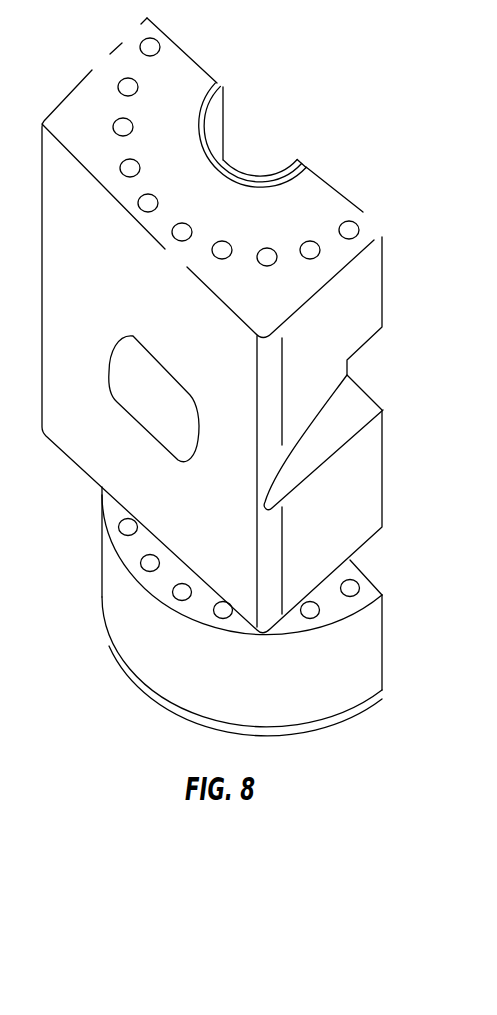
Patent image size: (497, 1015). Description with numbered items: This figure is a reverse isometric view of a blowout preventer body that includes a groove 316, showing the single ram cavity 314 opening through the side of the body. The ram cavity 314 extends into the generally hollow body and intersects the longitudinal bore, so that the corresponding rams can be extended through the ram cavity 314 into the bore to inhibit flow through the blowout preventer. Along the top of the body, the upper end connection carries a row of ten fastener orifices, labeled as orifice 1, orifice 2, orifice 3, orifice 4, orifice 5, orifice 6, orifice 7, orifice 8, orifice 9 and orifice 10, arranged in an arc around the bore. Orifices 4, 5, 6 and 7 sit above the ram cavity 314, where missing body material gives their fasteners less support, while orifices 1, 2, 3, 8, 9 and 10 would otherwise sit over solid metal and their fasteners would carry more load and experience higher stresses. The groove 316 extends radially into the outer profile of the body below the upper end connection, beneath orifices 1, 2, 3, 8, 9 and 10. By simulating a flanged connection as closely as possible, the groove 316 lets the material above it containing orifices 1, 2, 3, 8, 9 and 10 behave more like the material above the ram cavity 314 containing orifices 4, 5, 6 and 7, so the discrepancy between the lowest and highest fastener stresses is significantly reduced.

The orifice 1 is at (143, 33).
The orifice 2 is at (117, 77).
The orifice 3 is at (110, 124).
The orifice 4 is at (120, 168).
The orifice 5 is at (137, 221).
The orifice 6 is at (181, 250).
The orifice 7 is at (222, 266).
The orifice 8 is at (267, 273).
The orifice 9 is at (316, 261).
The orifice 10 is at (366, 228).
The ram cavity 314 is at (152, 412).
The groove 316 is at (355, 400).